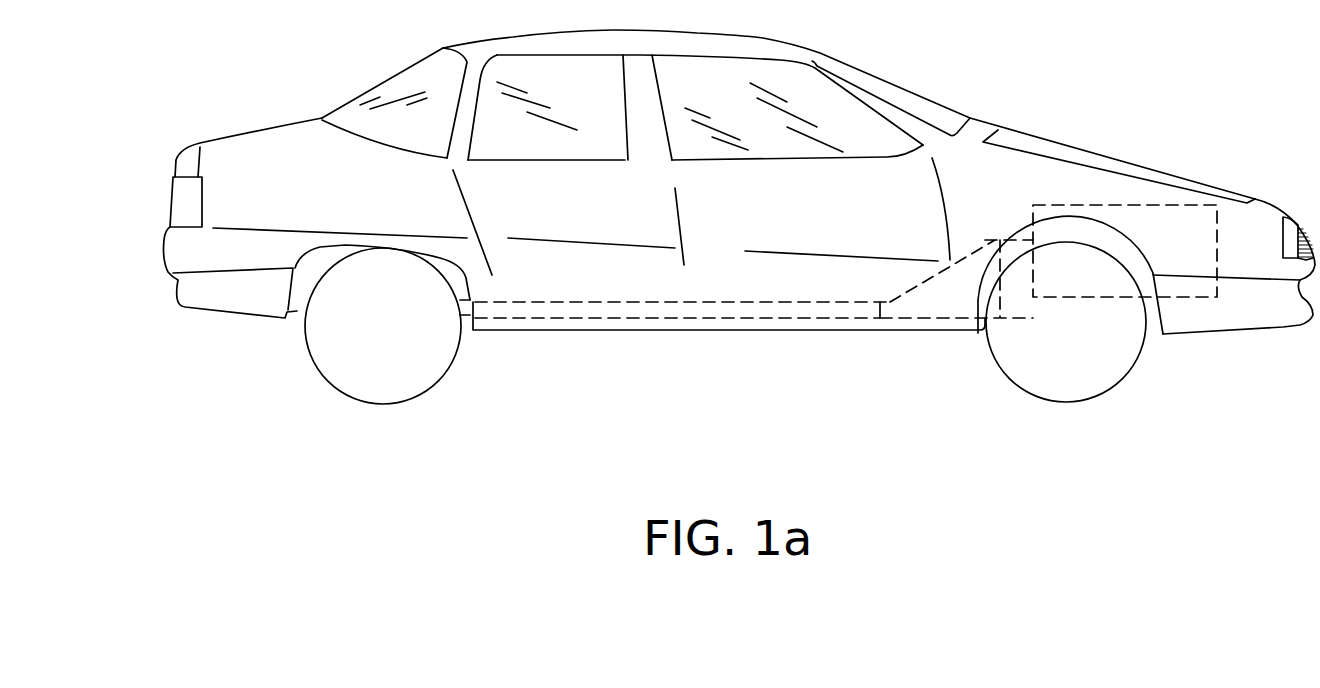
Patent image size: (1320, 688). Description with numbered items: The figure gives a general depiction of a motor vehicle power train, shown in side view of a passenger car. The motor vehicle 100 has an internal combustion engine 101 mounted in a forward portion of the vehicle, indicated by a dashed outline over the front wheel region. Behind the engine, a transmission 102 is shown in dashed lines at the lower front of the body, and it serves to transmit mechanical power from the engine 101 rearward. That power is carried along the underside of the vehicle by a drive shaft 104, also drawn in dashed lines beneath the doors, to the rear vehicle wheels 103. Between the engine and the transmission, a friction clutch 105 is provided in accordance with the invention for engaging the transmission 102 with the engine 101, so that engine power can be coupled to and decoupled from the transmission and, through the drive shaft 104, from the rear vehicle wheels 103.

The motor vehicle 100 is at (1193, 463).
The internal combustion engine 101 is at (1152, 255).
The transmission 102 is at (940, 307).
The rear vehicle wheels 103 is at (405, 377).
The drive shaft 104 is at (685, 320).
The friction clutch 105 is at (1018, 305).